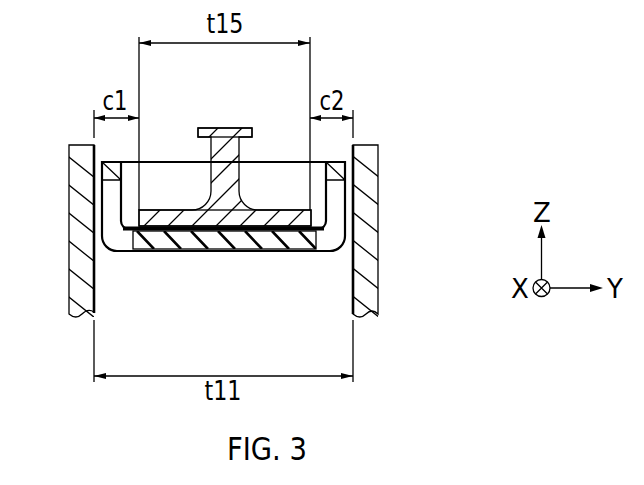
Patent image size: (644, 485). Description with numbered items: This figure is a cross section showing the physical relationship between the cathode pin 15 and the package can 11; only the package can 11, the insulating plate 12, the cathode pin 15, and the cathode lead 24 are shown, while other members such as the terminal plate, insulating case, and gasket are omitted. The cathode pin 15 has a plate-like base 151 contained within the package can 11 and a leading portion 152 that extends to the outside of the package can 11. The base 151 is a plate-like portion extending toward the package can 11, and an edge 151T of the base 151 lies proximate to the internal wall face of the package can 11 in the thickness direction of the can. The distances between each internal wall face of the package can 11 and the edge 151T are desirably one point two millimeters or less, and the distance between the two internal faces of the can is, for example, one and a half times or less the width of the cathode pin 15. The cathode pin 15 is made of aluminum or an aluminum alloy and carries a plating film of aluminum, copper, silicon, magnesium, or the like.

The package can 11 is at (80, 221).
The insulating plate 12 is at (192, 246).
The cathode lead 24 is at (246, 244).
The cathode pin 15 is at (267, 190).
The base 151 is at (170, 218).
The leading portion 152 is at (225, 135).
The edge 151T is at (310, 248).